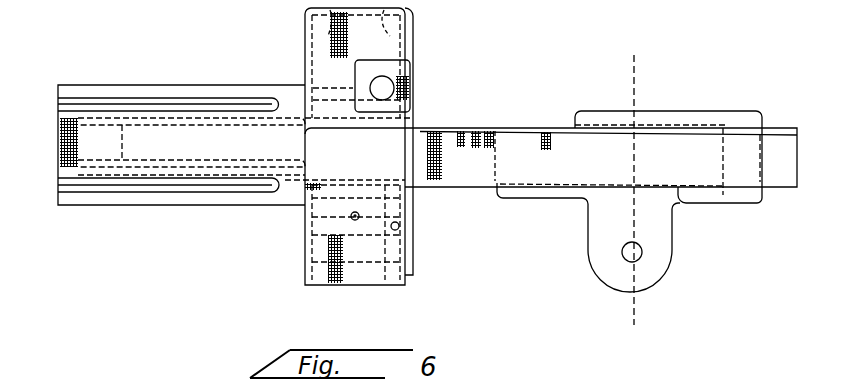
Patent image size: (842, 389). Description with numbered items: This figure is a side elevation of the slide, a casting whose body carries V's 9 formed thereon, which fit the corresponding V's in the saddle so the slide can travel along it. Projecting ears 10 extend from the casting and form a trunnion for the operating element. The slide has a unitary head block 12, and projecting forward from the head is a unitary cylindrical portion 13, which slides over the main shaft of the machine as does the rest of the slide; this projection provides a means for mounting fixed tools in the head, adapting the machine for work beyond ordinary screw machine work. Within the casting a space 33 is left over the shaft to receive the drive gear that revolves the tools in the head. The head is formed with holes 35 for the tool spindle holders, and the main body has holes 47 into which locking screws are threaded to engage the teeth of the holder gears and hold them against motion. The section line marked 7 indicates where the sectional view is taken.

The V's 9 is at (517, 150).
The projecting ears 10 is at (707, 212).
The head block 12 is at (410, 190).
The cylindrical portion 13 is at (138, 205).
The space 33 is at (493, 160).
The holes 35 is at (405, 32).
The holes 47 is at (440, 128).
The section line 7- 7 is at (634, 55).